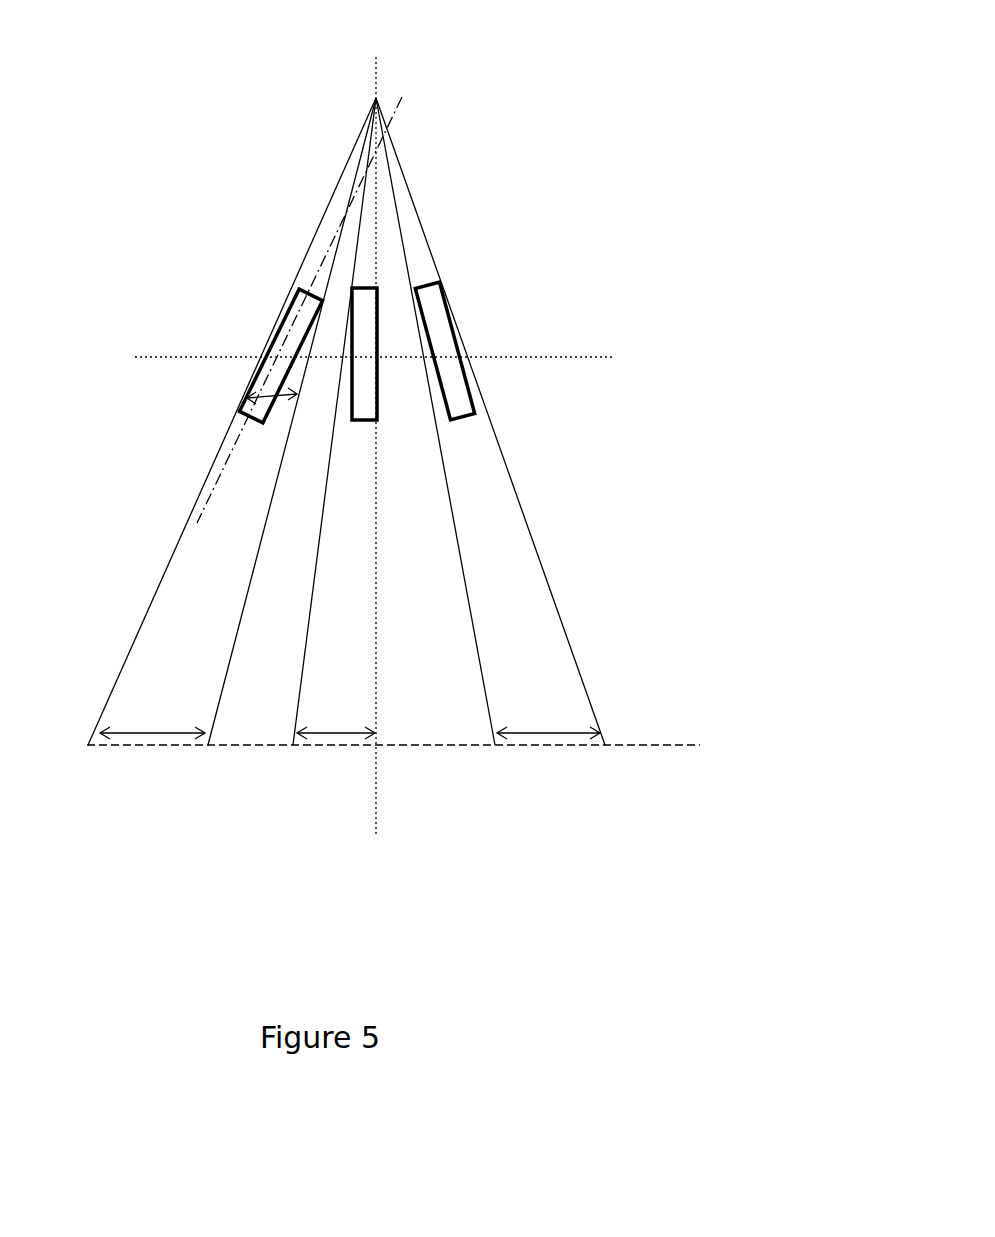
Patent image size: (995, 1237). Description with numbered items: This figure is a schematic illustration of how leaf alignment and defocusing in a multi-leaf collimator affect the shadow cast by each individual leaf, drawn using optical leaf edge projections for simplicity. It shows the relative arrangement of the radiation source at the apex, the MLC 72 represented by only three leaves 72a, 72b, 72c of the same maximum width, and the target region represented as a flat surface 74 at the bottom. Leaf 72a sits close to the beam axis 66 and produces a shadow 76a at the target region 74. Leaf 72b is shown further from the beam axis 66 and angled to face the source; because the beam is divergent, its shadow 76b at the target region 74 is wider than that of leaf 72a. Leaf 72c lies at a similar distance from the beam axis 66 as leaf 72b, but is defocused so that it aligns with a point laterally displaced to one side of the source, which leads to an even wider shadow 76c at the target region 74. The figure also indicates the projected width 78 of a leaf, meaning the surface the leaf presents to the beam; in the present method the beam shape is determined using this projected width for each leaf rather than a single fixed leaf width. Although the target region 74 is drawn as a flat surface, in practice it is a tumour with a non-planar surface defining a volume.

The beam axis 66 is at (376, 423).
The MLC 72 is at (398, 344).
The leaf 72a is at (378, 310).
The leaf 72b is at (457, 347).
The leaf 72c is at (268, 352).
The flat surface 74 is at (431, 747).
The shadow 76a is at (336, 772).
The shadow 76b is at (548, 772).
The shadow 76c is at (152, 772).
The projected width 78 is at (250, 417).